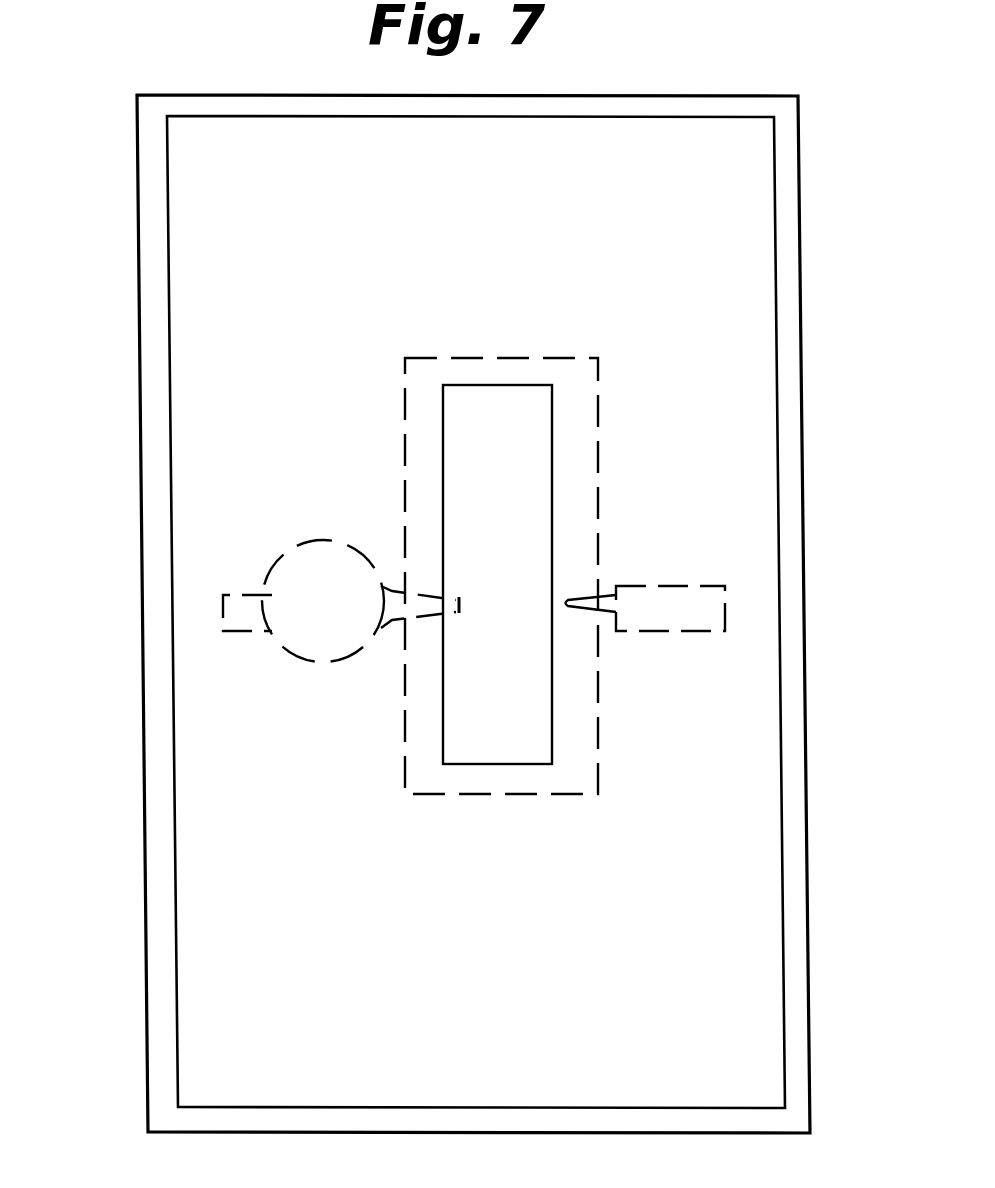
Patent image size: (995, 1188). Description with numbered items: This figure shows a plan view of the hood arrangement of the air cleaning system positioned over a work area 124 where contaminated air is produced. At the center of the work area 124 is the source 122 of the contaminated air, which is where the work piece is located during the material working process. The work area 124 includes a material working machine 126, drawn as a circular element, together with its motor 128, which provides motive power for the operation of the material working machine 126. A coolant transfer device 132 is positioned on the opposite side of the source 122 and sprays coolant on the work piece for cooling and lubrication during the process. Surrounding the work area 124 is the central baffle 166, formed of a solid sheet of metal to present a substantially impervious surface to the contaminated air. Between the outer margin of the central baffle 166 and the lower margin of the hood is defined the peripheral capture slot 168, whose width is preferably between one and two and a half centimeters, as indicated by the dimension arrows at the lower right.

The source 122 is at (462, 764).
The work area 124 is at (518, 357).
The material working machine 126 is at (320, 538).
The motor 128 is at (238, 632).
The coolant transfer device 132 is at (643, 631).
The central baffle 166 is at (170, 273).
The peripheral capture slot 168 is at (162, 822).